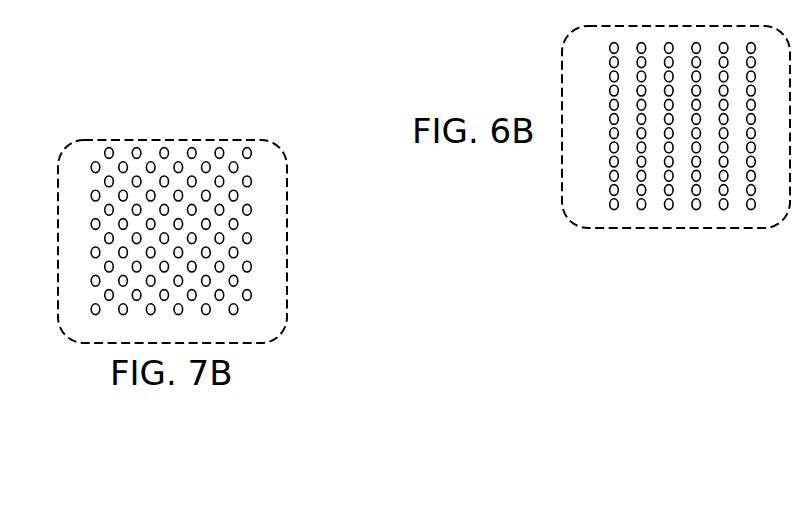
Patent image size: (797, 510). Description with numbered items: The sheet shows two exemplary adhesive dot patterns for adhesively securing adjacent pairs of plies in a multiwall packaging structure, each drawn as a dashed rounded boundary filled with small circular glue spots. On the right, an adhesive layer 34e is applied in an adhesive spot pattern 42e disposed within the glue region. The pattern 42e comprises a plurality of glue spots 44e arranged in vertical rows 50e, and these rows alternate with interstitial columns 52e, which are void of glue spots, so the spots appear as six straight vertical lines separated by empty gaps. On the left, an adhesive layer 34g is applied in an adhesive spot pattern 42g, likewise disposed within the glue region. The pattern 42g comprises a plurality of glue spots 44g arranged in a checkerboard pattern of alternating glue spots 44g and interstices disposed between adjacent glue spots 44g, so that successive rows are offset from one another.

In FIG. 7B, the adhesive layer 34g is at (264, 218).
In FIG. 7B, the adhesive spot pattern 42g is at (290, 250).
In FIG. 7B, the glue spots 44g is at (206, 162).
In FIG. 6B, the adhesive layer 34e is at (578, 93).
In FIG. 6B, the adhesive spot pattern 42e is at (582, 170).
In FIG. 6B, the glue spots 44e is at (724, 210).
In FIG. 6B, the vertical rows 50e is at (641, 210).
In FIG. 6B, the interstitial columns 52e is at (655, 206).